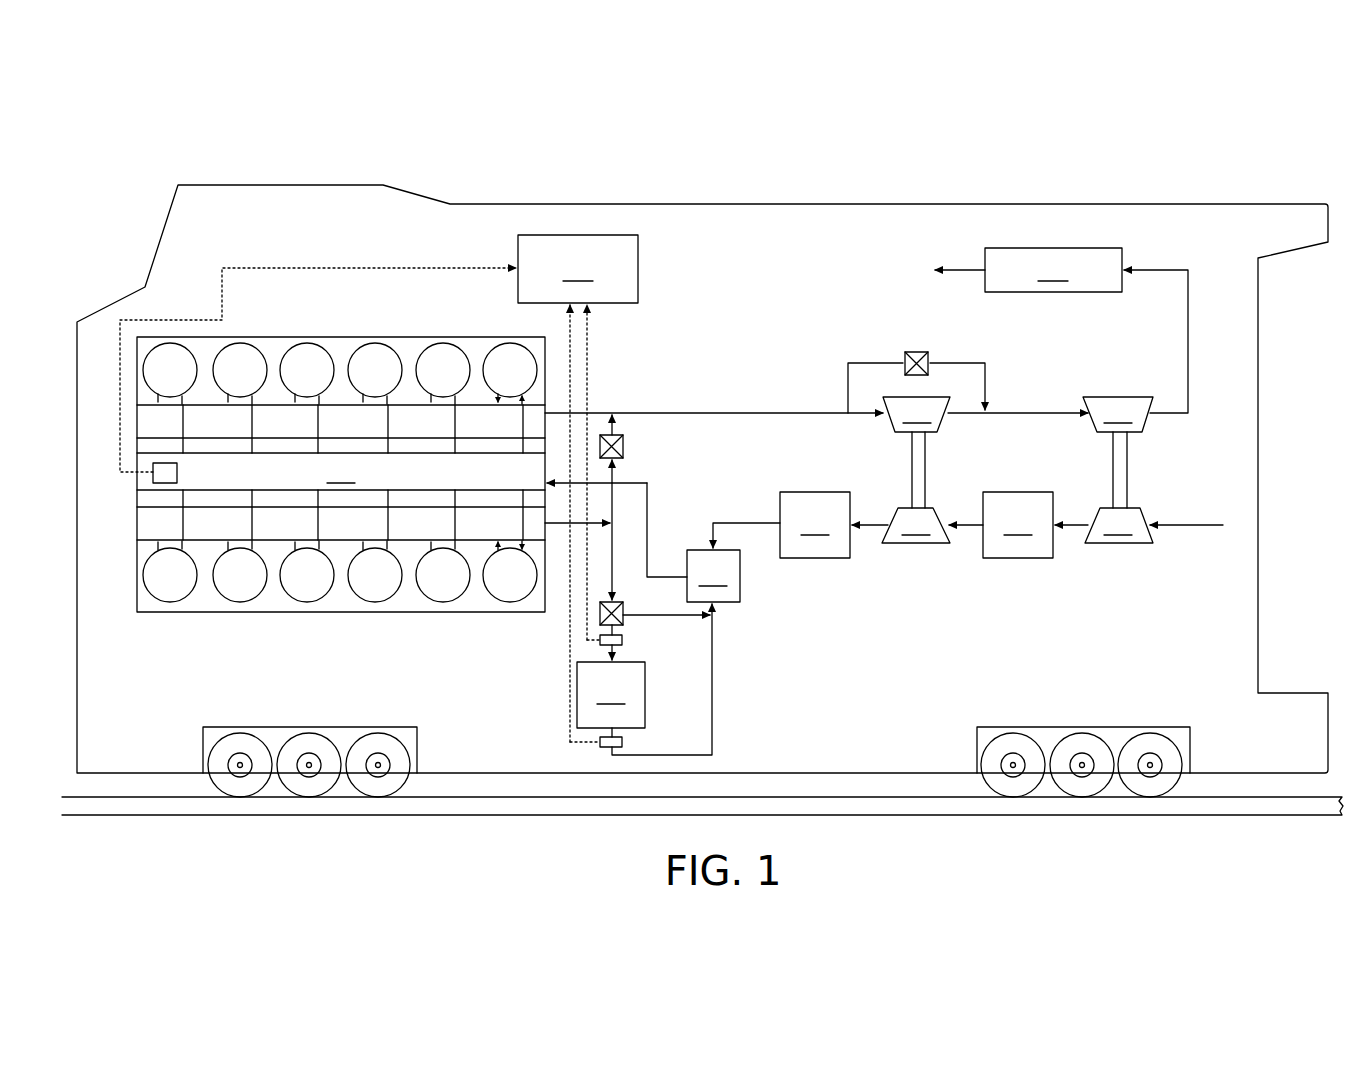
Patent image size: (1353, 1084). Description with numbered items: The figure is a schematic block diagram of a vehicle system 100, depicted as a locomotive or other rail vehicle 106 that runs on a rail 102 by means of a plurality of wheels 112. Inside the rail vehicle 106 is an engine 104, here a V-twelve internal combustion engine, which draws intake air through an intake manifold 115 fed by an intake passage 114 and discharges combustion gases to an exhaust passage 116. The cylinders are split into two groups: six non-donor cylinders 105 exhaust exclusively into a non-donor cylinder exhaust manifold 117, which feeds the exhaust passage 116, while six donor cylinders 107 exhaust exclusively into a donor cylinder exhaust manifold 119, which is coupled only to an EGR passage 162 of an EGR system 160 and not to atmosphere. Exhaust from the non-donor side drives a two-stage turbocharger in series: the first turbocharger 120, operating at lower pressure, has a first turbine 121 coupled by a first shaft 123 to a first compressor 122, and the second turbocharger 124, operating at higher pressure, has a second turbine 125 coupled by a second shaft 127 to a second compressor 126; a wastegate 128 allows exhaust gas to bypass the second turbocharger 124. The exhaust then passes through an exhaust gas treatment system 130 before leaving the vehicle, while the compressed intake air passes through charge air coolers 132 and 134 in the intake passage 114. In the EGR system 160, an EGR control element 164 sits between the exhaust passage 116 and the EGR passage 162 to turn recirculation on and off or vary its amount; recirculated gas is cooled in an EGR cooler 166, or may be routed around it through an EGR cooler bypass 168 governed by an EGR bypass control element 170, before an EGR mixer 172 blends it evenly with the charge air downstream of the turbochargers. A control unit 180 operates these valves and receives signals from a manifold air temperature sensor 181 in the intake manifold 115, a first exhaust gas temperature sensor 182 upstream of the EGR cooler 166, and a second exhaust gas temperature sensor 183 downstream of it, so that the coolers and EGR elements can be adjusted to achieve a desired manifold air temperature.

The vehicle system 100 is at (702, 452).
The rail 102 is at (1257, 815).
The engine 104 is at (314, 460).
The non-donor cylinders 105 is at (307, 342).
The rail vehicle 106 is at (1015, 204).
The donor cylinders 107 is at (307, 600).
The wheels 112 is at (400, 755).
The intake passage 114 is at (1170, 528).
The intake manifold 115 is at (341, 472).
The exhaust passage 116 is at (710, 413).
The non-donor cylinder exhaust manifold 117 is at (137, 422).
The donor cylinder exhaust manifold 119 is at (137, 527).
The first turbocharger 120 is at (1129, 498).
The first turbine 121 is at (1118, 414).
The first compressor 122 is at (1120, 560).
The first shaft 123 is at (1127, 490).
The second turbocharger 124 is at (924, 461).
The second turbine 125 is at (916, 414).
The second compressor 126 is at (917, 560).
The second shaft 127 is at (925, 490).
The wastegate 128 is at (917, 352).
The exhaust gas treatment system 130 is at (1028, 270).
The charge air cooler 132 is at (1018, 525).
The charge air cooler 134 is at (800, 525).
The EGR system 160 is at (667, 585).
The EGR passage 162 is at (550, 526).
The EGR control element 164 is at (623, 449).
The EGR cooler 166 is at (611, 695).
The EGR cooler bypass 168 is at (645, 617).
The EGR bypass control element 170 is at (637, 598).
The EGR mixer 172 is at (713, 576).
The control unit 180 is at (578, 488).
The manifold air temperature sensor 181 is at (177, 475).
The first exhaust gas temperature sensor 182 is at (622, 640).
The second exhaust gas temperature sensor 183 is at (622, 742).